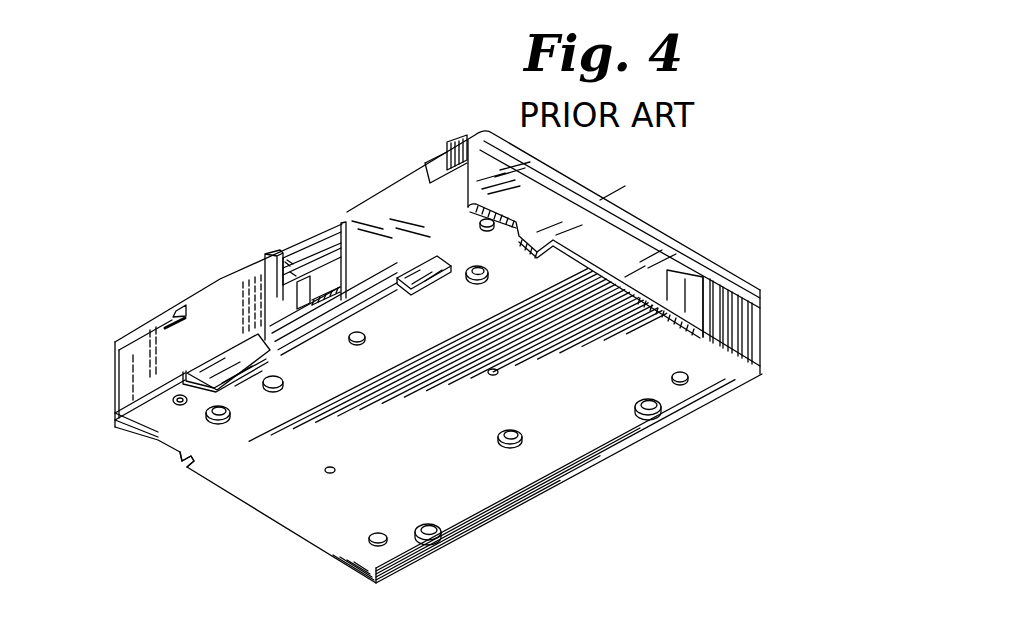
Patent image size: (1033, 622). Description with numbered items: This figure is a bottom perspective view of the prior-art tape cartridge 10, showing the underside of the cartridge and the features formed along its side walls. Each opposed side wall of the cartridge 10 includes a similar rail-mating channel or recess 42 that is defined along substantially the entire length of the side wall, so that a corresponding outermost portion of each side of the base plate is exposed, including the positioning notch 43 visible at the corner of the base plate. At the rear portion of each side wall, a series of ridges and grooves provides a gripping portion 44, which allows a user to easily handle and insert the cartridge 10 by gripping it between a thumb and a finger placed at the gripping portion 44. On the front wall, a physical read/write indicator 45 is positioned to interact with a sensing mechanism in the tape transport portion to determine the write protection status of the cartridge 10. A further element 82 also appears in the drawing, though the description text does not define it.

The tape cartridge 10 is at (424, 497).
The rail-mating channel or recess 42 is at (593, 247).
The positioning notch 43 is at (170, 443).
The gripping portion 44 is at (757, 313).
The physical read/write indicator 45 is at (445, 156).
The rail / rib 82 is at (393, 297).